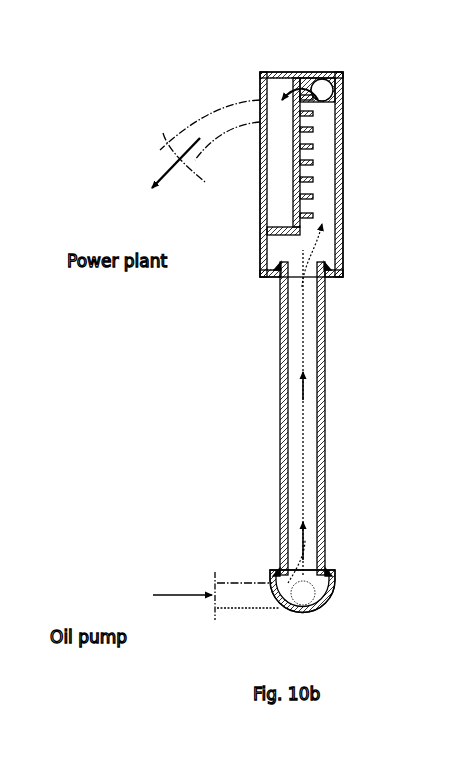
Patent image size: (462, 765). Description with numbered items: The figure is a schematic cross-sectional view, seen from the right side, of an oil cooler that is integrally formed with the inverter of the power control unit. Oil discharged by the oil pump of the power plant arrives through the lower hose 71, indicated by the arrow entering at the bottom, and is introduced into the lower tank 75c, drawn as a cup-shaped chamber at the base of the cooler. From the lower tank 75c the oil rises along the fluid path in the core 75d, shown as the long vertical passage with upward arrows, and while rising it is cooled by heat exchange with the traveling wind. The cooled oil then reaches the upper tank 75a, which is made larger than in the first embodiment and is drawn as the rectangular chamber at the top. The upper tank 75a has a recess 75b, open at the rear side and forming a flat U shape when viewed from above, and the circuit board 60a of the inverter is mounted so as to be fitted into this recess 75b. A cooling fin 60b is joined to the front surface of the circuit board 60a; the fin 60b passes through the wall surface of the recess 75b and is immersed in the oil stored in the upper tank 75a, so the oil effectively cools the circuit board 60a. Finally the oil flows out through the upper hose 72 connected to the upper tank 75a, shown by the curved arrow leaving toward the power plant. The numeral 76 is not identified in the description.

The circuit board 60a is at (280, 78).
The cooling fin 60b is at (313, 150).
The lower hose 71 is at (247, 580).
The upper hose 72 is at (203, 114).
The upper tank 75a is at (343, 135).
The recess 75b is at (280, 227).
The lower tank 75c is at (336, 588).
The core 75d is at (327, 390).
The pipe 76 is at (276, 365).